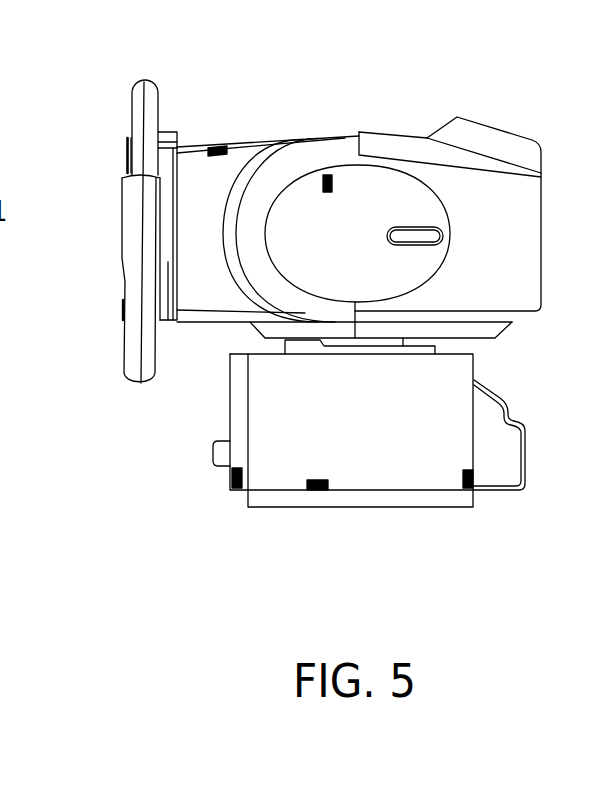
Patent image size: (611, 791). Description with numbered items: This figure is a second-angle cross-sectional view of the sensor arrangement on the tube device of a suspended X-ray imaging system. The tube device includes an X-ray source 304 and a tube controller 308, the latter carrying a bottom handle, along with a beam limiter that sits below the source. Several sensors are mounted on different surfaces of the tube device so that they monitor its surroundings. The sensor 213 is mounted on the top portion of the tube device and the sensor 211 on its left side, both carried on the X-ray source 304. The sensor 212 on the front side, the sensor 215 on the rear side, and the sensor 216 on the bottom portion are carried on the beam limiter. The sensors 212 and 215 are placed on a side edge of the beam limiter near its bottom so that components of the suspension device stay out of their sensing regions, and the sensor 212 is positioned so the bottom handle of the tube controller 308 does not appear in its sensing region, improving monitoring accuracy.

The X-ray source 304 is at (531, 242).
The tube controller 308 is at (138, 103).
The sensor 211 is at (328, 175).
The sensor 212 is at (237, 490).
The sensor 213 is at (221, 147).
The sensor 215 is at (467, 509).
The sensor 216 is at (318, 490).